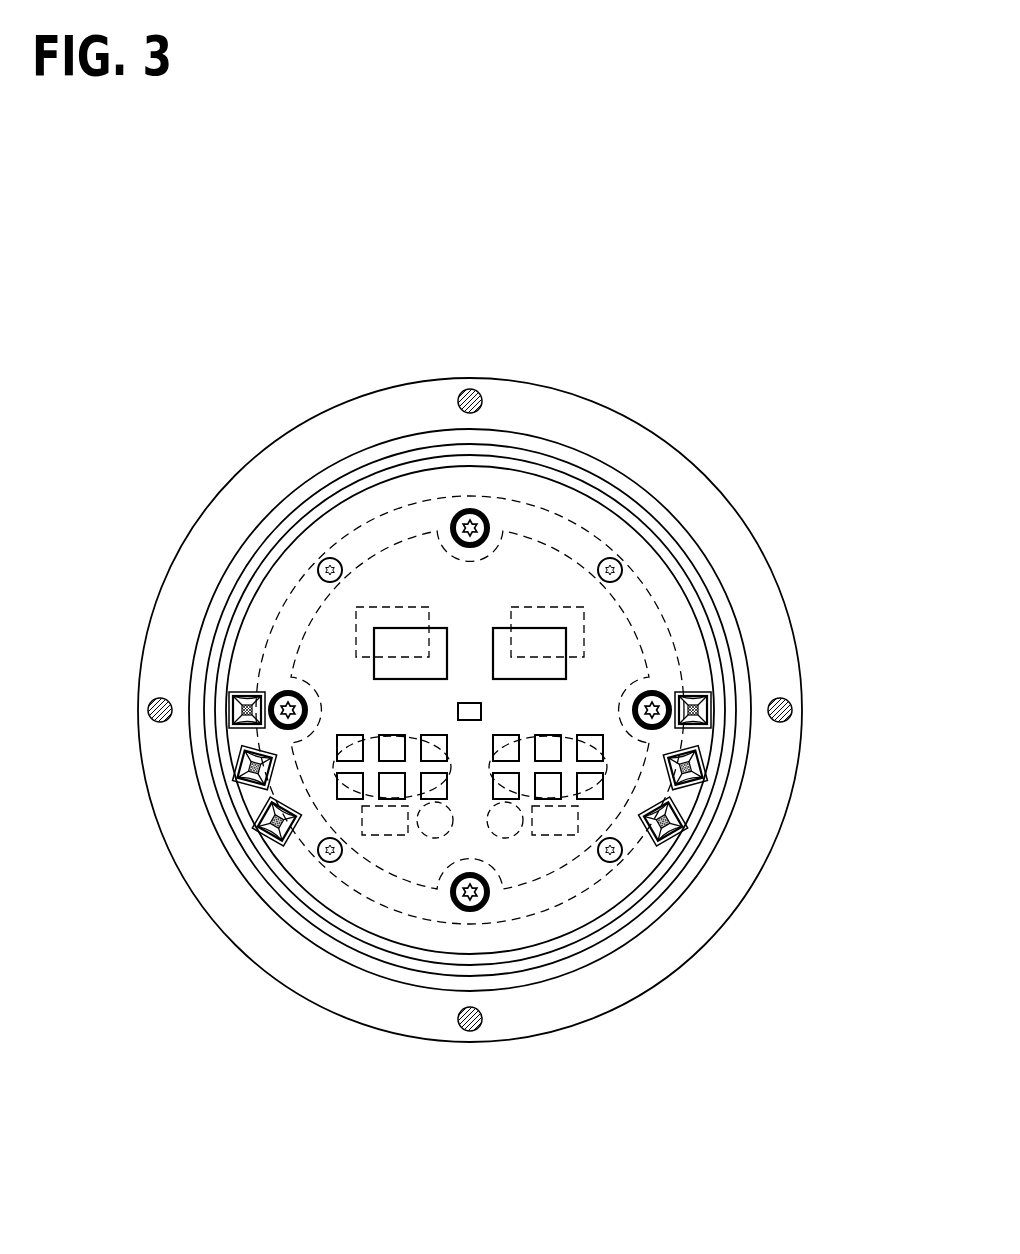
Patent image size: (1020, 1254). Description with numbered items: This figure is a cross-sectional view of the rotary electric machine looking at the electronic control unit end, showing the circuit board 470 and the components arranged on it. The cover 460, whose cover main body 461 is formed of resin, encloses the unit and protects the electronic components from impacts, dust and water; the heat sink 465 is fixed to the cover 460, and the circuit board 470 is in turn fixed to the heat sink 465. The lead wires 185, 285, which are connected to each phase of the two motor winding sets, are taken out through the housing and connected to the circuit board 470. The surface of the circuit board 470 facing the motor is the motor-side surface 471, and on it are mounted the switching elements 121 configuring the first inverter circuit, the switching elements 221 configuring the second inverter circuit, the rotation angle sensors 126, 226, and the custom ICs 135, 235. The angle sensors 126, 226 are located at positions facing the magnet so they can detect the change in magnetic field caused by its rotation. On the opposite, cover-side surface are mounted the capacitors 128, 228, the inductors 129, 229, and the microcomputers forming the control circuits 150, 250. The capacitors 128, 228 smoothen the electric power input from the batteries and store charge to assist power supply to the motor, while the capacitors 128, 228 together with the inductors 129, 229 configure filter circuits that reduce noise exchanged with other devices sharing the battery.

The switching elements 121 is at (343, 797).
The rotation angle sensor 126 is at (421, 506).
The capacitor 128 is at (334, 770).
The inductor 129 is at (385, 837).
The custom IC 135 is at (374, 662).
The control circuit 150 is at (356, 618).
The lead wires 185 is at (229, 700).
The switching elements 221 is at (601, 798).
The rotation angle sensor 226 is at (468, 702).
The capacitor 228 is at (606, 770).
The inductor 229 is at (555, 837).
The custom IC 235 is at (566, 662).
The control circuit 250 is at (584, 618).
The lead wires 285 is at (711, 703).
The cover 460 is at (307, 418).
The cover main body 461 is at (257, 468).
The heat sink 465 is at (606, 556).
The circuit board 470 is at (560, 487).
The motor-side surface 471 is at (637, 553).